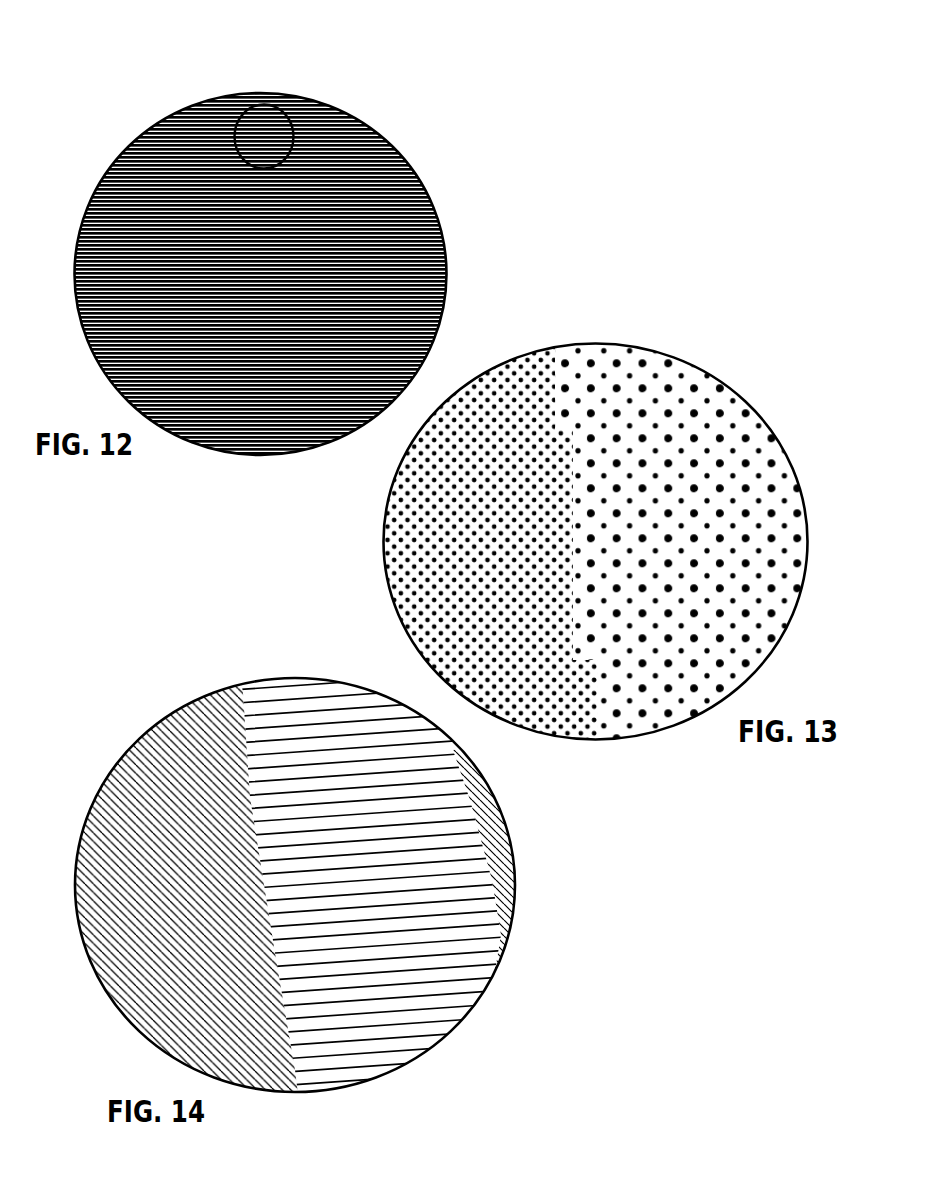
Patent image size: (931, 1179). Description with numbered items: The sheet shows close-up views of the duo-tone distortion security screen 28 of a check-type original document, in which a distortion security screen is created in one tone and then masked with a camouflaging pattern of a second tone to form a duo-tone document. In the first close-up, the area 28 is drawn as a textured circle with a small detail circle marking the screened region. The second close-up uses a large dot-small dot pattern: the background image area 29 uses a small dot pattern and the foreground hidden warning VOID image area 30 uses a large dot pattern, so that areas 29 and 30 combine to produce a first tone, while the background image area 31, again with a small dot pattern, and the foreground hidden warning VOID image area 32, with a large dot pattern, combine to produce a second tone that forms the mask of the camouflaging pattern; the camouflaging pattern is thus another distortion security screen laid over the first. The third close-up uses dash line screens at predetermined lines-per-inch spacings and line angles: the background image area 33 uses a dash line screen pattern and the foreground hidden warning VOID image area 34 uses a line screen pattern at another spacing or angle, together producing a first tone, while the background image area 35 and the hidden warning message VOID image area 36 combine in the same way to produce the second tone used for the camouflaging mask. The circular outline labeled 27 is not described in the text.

In FIG. 12, the woven mesh panel 27 is at (262, 275).
In FIG. 12, the duo-tone distortion security screen 28 is at (269, 111).
In FIG. 13, the background image area 29 is at (517, 420).
In FIG. 13, the foreground hidden warning image area 30 is at (752, 457).
In FIG. 13, the background image area 31 is at (502, 378).
In FIG. 13, the foreground hidden warning image area 32 is at (649, 408).
In FIG. 14, the background image area 33 is at (178, 800).
In FIG. 14, the foreground hidden warning image area 34 is at (456, 928).
In FIG. 14, the background image area 35 is at (156, 744).
In FIG. 14, the hidden warning message image area 36 is at (363, 853).